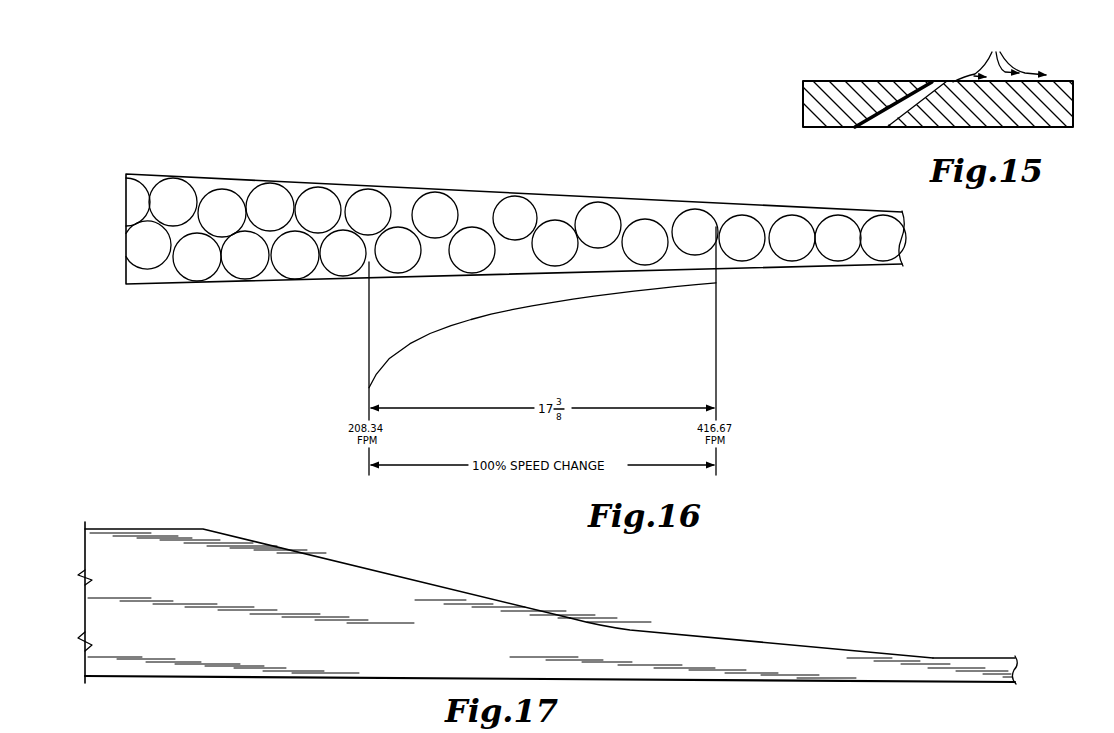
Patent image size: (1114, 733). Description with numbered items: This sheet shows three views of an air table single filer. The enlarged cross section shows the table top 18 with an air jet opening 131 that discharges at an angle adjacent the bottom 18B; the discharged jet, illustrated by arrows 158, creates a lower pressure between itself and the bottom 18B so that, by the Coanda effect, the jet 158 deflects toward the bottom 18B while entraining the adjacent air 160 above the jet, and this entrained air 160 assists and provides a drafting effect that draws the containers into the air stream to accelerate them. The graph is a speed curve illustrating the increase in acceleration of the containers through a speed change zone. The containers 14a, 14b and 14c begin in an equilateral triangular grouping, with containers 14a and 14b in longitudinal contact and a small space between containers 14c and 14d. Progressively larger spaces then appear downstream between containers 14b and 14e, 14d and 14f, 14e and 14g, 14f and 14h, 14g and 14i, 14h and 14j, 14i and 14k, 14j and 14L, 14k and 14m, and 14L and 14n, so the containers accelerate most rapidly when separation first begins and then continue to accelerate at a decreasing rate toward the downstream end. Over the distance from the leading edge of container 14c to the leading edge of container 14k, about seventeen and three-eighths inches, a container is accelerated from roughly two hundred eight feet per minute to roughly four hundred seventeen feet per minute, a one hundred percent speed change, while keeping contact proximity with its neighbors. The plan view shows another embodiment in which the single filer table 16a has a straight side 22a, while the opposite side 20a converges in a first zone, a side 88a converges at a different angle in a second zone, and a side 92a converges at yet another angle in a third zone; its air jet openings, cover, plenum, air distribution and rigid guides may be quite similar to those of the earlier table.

In FIG. 15, the filer table top 18 is at (888, 79).
In FIG. 15, the bottom 18B is at (1042, 120).
In FIG. 15, the air jet opening 131 is at (880, 125).
In FIG. 15, the entrainment air jet 158 is at (999, 60).
In FIG. 15, the entrained adjacent air 160 is at (970, 62).
In FIG. 16, the container 14a is at (330, 218).
In FIG. 16, the container 14b is at (380, 220).
In FIG. 16, the container 14c is at (355, 261).
In FIG. 16, the container 14d is at (410, 258).
In FIG. 16, the container 14e is at (447, 223).
In FIG. 16, the container 14f is at (483, 258).
In FIG. 16, the container 14g is at (527, 226).
In FIG. 16, the container 14h is at (567, 251).
In FIG. 16, the container 14i is at (608, 233).
In FIG. 16, the container 14j is at (655, 250).
In FIG. 16, the container 14k is at (707, 240).
In FIG. 16, the container 14L is at (754, 246).
In FIG. 16, the container 14m is at (806, 246).
In FIG. 16, the container 14n is at (850, 246).
In FIG. 17, the single filer table 16a is at (408, 638).
In FIG. 17, the converging side 20a is at (356, 566).
In FIG. 17, the straight side 22a is at (356, 680).
In FIG. 17, the side 88a is at (706, 634).
In FIG. 17, the side 92a is at (977, 657).